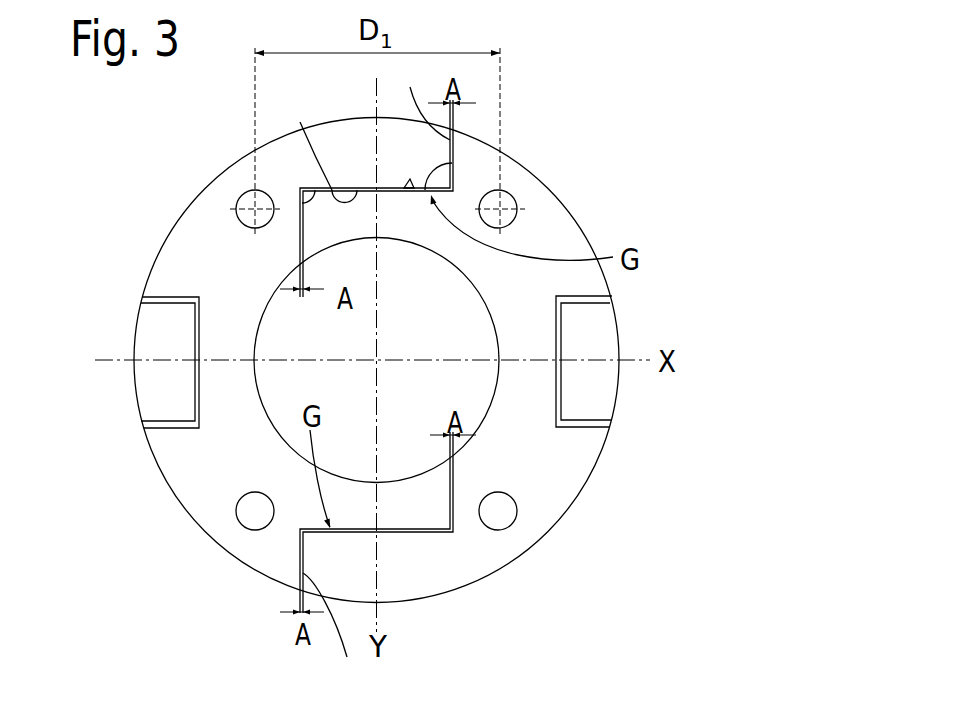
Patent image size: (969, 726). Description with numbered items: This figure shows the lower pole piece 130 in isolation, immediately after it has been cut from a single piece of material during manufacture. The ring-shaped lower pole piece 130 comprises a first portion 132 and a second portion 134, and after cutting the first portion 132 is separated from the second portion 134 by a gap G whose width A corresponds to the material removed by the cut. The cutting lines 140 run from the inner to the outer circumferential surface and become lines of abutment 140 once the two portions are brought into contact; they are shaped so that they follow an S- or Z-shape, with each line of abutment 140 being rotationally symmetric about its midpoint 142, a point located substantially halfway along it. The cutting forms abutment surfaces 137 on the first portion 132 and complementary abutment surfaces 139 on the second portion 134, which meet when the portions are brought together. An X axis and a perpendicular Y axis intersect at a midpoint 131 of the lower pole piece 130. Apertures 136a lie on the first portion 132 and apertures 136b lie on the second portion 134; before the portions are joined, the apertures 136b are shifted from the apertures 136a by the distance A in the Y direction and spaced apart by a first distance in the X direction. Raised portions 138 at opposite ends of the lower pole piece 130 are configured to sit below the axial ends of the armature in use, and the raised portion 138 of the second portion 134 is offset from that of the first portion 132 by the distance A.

The lower pole piece 130 is at (692, 117).
The midpoint 131 is at (352, 380).
The first portion 132 is at (213, 473).
The second portion 134 is at (553, 242).
The apertures 136a is at (243, 200).
The apertures 136b is at (513, 196).
The abutment surfaces 137 is at (310, 187).
The raised portions 138 is at (157, 324).
The abutment surfaces 139 is at (300, 257).
The cutting lines 140 is at (400, 187).
The midpoint of the line of abutment 142 is at (377, 187).